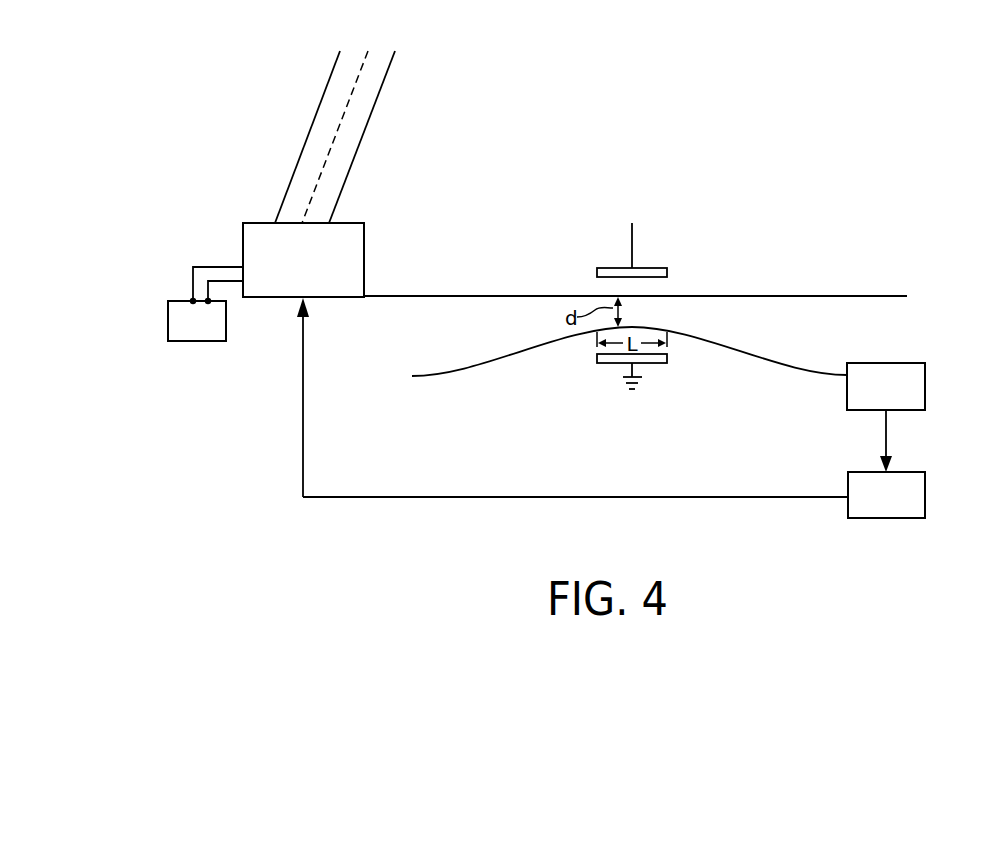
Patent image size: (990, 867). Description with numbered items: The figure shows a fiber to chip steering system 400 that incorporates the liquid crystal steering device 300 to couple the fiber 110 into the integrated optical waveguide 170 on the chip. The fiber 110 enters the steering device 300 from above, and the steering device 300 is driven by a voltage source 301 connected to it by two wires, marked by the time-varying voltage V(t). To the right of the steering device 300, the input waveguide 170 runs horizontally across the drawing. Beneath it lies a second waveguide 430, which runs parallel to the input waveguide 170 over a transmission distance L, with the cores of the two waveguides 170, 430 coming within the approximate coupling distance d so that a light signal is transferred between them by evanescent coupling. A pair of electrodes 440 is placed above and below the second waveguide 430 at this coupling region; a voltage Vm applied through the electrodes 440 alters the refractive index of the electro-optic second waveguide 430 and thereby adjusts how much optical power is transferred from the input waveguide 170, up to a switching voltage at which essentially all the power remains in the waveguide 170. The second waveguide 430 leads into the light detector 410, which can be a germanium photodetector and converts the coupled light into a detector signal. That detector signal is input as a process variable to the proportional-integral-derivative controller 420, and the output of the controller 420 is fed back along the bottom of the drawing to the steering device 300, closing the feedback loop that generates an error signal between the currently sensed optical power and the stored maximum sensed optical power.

The fiber 110 is at (313, 120).
The integrated optical waveguide 170 is at (877, 295).
The liquid crystal steering device 300 is at (284, 268).
The voltage source V(t) 301 is at (178, 334).
The fiber to chip steering system 400 is at (825, 120).
The light detector 410 is at (867, 398).
The proportional-integral-derivative (PID) controller 420 is at (867, 507).
The second waveguide 430 is at (772, 367).
The electrodes 440 is at (655, 270).